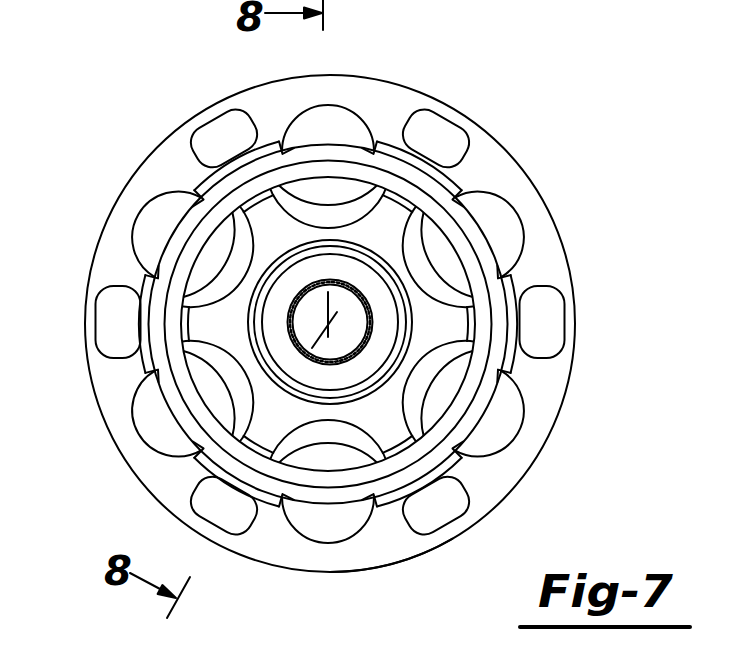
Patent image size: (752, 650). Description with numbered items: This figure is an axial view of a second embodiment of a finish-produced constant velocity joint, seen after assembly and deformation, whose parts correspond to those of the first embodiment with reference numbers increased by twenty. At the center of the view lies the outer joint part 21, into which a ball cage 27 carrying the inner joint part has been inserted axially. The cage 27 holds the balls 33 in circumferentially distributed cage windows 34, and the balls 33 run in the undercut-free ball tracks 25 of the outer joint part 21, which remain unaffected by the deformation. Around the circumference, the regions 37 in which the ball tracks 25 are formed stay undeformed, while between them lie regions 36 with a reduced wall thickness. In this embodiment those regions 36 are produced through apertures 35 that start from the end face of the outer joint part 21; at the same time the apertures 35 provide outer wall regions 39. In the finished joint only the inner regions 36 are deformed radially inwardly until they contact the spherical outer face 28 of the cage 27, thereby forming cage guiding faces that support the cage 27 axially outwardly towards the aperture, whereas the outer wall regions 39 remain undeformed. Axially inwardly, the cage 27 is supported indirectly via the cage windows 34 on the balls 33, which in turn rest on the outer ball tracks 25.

The outer joint part 21 is at (138, 168).
The ball tracks 25 is at (350, 122).
The ball cage 27 is at (305, 480).
The spherical outer face of the cage 28 is at (268, 487).
The balls 33 is at (498, 212).
The cage windows 34 is at (517, 250).
The apertures 35 is at (428, 520).
The regions with reduced wall thickness 36 is at (435, 484).
The regions accommodating the ball tracks 37 is at (541, 439).
The outer wall regions 39 is at (468, 524).